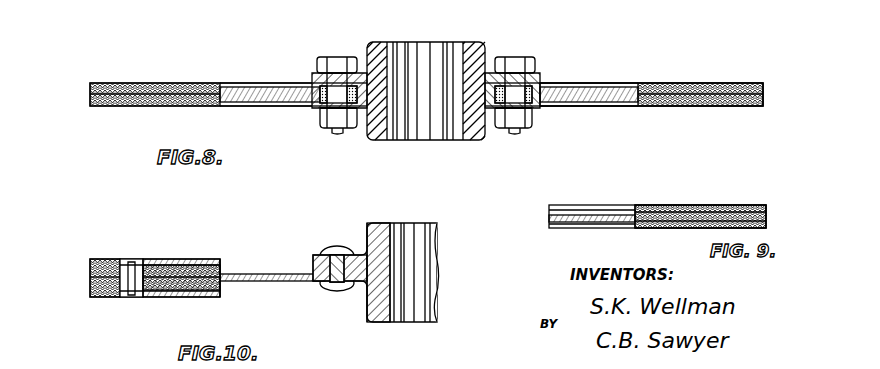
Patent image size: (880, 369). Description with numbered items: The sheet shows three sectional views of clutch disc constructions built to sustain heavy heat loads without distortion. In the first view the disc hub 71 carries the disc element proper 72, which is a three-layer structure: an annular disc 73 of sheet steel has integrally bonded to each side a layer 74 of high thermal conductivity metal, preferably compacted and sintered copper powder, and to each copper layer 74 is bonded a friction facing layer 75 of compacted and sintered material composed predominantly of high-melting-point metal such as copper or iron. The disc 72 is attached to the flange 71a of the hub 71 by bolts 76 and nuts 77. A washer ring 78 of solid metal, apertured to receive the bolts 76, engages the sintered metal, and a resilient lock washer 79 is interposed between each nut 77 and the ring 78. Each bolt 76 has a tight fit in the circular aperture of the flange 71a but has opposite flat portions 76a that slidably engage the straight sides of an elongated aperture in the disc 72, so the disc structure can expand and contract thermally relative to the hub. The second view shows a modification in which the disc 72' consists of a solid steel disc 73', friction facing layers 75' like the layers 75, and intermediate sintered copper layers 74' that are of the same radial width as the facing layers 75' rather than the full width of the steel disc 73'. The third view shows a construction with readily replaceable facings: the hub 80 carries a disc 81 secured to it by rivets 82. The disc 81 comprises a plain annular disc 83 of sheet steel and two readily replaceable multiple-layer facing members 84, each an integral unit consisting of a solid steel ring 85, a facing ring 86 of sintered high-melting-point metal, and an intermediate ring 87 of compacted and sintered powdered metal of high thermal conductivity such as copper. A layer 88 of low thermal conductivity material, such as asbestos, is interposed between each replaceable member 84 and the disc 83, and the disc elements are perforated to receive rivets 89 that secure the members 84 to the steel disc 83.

In FIG. 8, the disc hub 71 is at (485, 44).
In FIG. 8, the flange of the hub 71a is at (538, 73).
In FIG. 8, the disc element 72 is at (651, 70).
In FIG. 8, the annular disc of sheet steel 73 is at (401, 94).
In FIG. 8, the layer of high thermal conductivity metal 74 is at (429, 92).
In FIG. 8, the friction facing layer 75 is at (428, 92).
In FIG. 8, the bolt 76 is at (338, 62).
In FIG. 8, the flat portion of bolt 76a is at (330, 90).
In FIG. 8, the nut 77 is at (340, 130).
In FIG. 8, the washer ring 78 is at (322, 103).
In FIG. 8, the resilient lock washer 79 is at (328, 112).
In FIG. 9, the disc 72' is at (700, 195).
In FIG. 9, the solid steel disc 73' is at (672, 232).
In FIG. 9, the intermediate sintered copper layer 74' is at (634, 221).
In FIG. 9, the friction facing layer 75' is at (693, 211).
In FIG. 10, the hub 80 is at (375, 225).
In FIG. 10, the disc 81 is at (112, 259).
In FIG. 10, the rivet 82 is at (335, 291).
In FIG. 10, the plain annular disc of sheet steel 83 is at (278, 274).
In FIG. 10, the replaceable multiple-layer facing member 84 is at (90, 265).
In FIG. 10, the solid steel ring 85 is at (158, 259).
In FIG. 10, the facing ring 86 is at (172, 259).
In FIG. 10, the intermediate ring of high thermal conductivity 87 is at (200, 259).
In FIG. 10, the layer of low thermal conductivity material 88 is at (222, 270).
In FIG. 10, the rivet 89 is at (130, 280).